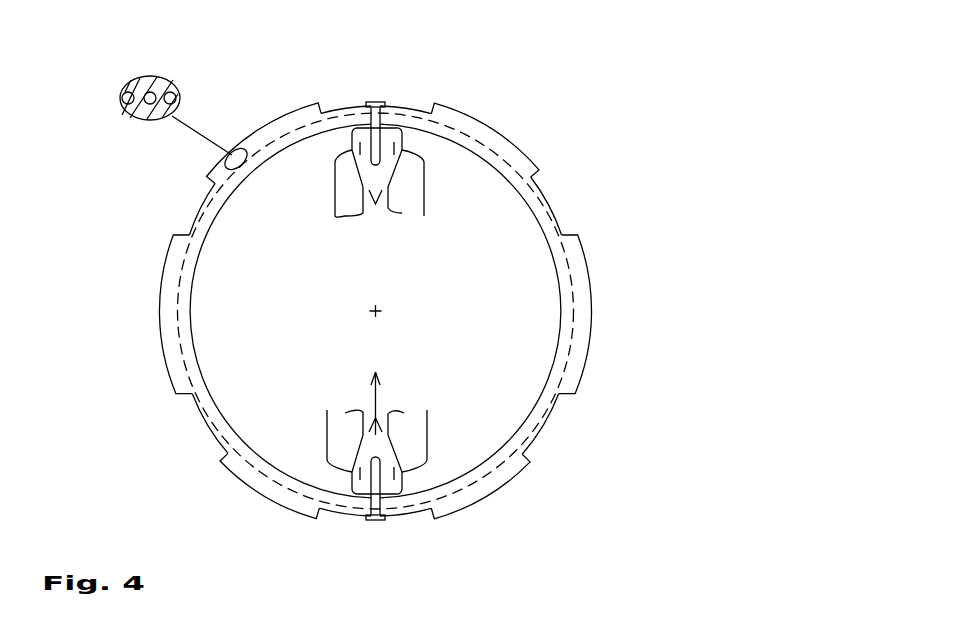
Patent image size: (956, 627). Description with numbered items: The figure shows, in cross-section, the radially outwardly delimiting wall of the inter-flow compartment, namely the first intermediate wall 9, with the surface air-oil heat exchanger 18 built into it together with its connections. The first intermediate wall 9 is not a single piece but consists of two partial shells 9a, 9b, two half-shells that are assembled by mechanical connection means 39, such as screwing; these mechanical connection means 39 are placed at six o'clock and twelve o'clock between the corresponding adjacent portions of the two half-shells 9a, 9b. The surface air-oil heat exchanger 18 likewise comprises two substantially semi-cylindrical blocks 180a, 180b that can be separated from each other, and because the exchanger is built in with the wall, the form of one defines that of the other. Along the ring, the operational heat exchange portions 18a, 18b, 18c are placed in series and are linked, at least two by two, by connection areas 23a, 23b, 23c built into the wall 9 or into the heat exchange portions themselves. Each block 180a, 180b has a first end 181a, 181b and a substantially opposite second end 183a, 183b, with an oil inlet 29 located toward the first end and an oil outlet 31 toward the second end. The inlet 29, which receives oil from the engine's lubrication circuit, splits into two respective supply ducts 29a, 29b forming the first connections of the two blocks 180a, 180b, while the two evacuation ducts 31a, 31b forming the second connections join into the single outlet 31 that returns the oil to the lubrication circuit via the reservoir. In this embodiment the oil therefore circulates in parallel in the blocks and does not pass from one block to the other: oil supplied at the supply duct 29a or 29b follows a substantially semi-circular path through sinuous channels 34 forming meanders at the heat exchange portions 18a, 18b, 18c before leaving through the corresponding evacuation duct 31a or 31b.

The first intermediate wall 9 is at (556, 217).
The partial shell 9a is at (225, 411).
The partial shell 9b is at (575, 340).
The surface air-oil heat exchanger 18 is at (510, 137).
The operational heat exchange portion 18a is at (265, 133).
The operational heat exchange portion 18b is at (168, 293).
The operational heat exchange portion 18c is at (252, 475).
The block 180a is at (158, 332).
The block 180b is at (593, 307).
The first end 181a is at (348, 108).
The first end 181b is at (398, 108).
The second end 183a is at (350, 500).
The second end 183b is at (395, 512).
The connection area 23a is at (540, 225).
The connection area 23b is at (542, 412).
The connection area 23c is at (212, 223).
The oil inlet 29 is at (376, 250).
The supply duct 29a is at (331, 196).
The supply duct 29b is at (423, 198).
The oil outlet 31 is at (363, 412).
The evacuation duct 31a is at (327, 426).
The evacuation duct 31b is at (421, 426).
The sinuous channel 34 is at (150, 92).
The mechanical connection means 39 is at (375, 100).